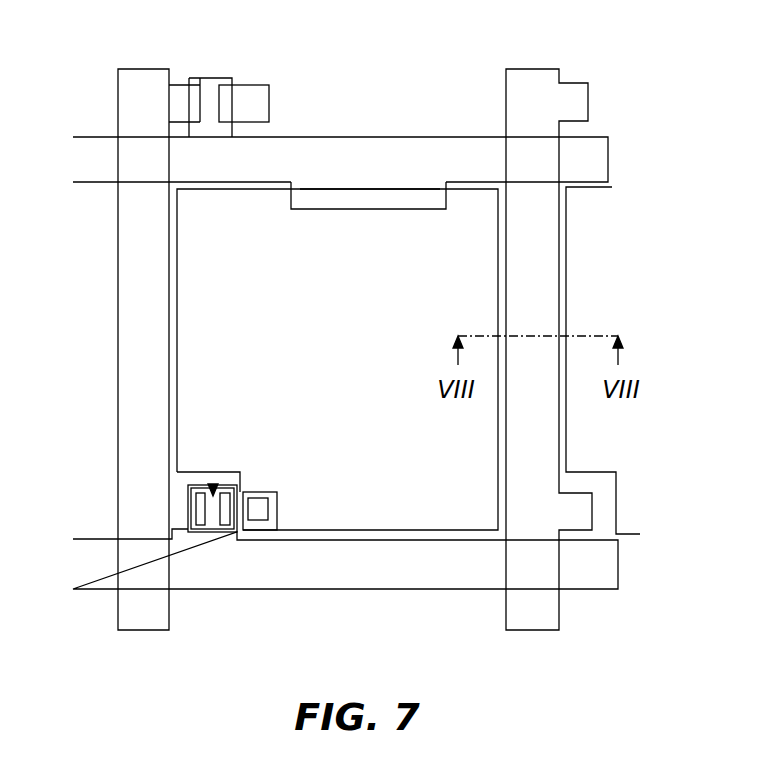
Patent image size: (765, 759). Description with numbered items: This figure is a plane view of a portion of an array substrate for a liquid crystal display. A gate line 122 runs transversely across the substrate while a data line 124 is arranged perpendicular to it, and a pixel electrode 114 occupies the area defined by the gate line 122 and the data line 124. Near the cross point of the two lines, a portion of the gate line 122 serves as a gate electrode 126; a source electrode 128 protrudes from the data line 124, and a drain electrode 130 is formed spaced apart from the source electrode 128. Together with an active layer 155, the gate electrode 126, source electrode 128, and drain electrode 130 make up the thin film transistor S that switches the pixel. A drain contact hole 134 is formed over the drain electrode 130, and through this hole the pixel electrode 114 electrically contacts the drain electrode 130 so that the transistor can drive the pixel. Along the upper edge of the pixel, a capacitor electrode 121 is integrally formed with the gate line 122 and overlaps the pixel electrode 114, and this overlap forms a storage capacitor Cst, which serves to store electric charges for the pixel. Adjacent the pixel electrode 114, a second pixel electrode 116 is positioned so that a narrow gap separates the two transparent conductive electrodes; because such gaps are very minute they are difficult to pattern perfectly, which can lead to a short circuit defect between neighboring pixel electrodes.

The pixel electrode 114 is at (177, 282).
The second pixel electrode 116 is at (612, 187).
The capacitor electrode 121 is at (326, 209).
The storage capacitor Cst is at (382, 184).
The gate line 122 is at (353, 573).
The data line 124 is at (132, 376).
The gate electrode 126 is at (203, 483).
The source electrode 128 is at (178, 497).
The drain electrode 130 is at (253, 514).
The drain contact hole 134 is at (244, 532).
The active layer 155 is at (214, 535).
The thin film transistor S is at (213, 486).